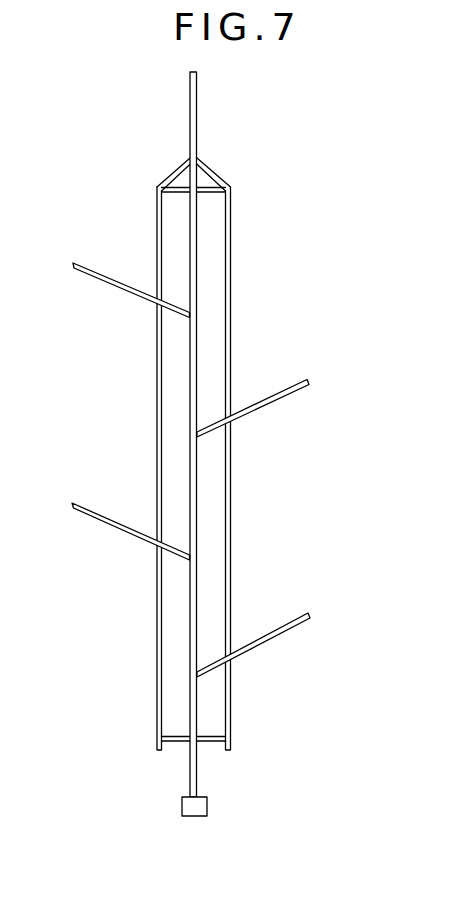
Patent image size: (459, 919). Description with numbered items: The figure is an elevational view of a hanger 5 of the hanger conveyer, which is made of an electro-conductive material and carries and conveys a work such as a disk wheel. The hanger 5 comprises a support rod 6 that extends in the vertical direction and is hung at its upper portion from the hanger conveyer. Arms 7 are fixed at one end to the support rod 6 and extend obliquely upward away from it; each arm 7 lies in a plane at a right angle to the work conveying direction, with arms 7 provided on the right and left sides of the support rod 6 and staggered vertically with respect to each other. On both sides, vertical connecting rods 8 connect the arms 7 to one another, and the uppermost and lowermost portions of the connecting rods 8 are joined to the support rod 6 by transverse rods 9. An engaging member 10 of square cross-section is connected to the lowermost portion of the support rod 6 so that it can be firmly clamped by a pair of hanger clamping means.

The hanger 5 is at (203, 466).
The support rod 6 is at (196, 363).
The arms 7 is at (114, 290).
The connecting rods 8 is at (157, 460).
The transverse rods 9 is at (208, 185).
The engaging member 10 is at (182, 800).